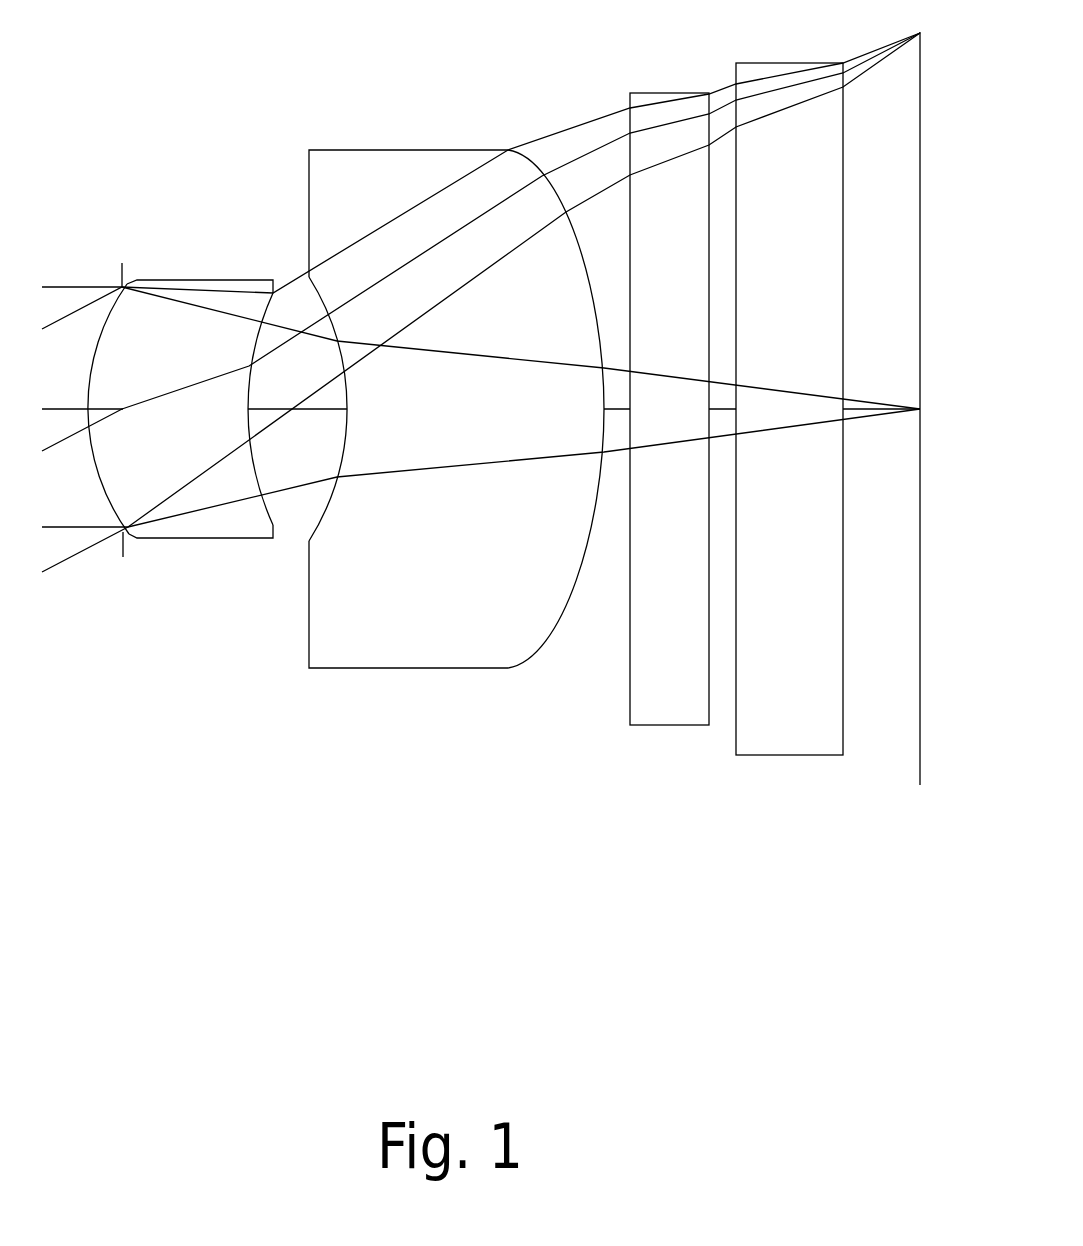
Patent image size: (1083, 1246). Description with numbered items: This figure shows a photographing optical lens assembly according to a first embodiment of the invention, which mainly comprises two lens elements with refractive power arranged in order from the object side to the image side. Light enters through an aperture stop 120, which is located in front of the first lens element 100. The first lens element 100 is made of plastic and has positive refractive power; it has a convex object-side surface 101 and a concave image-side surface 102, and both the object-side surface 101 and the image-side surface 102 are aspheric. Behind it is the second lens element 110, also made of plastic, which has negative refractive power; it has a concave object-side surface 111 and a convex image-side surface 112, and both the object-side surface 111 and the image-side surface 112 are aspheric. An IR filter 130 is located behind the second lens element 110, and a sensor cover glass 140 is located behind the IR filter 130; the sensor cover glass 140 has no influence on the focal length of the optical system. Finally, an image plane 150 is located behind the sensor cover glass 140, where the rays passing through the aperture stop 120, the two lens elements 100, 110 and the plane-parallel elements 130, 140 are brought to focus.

The first lens element 100 is at (163, 411).
The object-side surface 101 is at (100, 483).
The image-side surface 102 is at (262, 480).
The second lens element 110 is at (398, 458).
The object-side surface 111 is at (343, 387).
The image-side surface 112 is at (557, 630).
The aperture stop 120 is at (120, 268).
The IR filter 130 is at (674, 685).
The sensor cover glass 140 is at (793, 715).
The image plane 150 is at (920, 727).